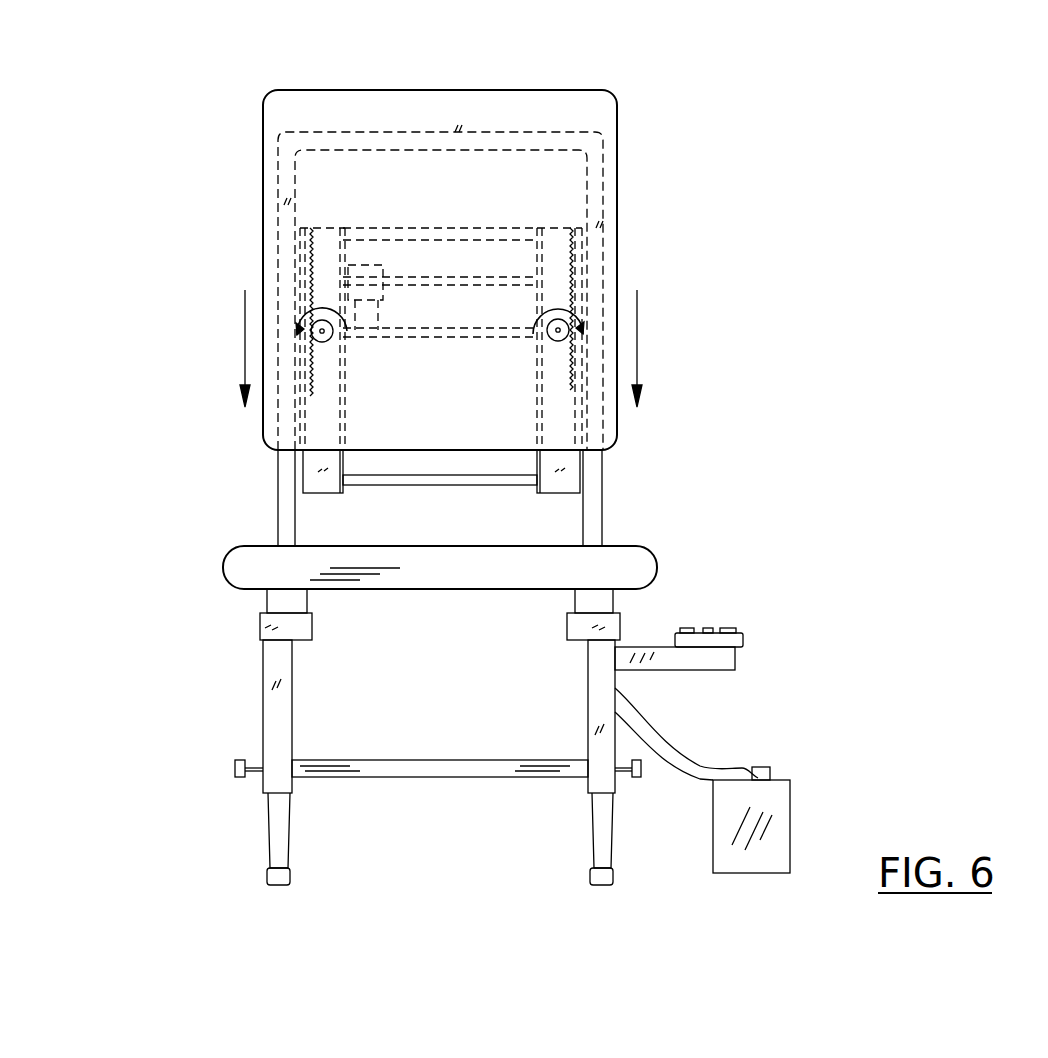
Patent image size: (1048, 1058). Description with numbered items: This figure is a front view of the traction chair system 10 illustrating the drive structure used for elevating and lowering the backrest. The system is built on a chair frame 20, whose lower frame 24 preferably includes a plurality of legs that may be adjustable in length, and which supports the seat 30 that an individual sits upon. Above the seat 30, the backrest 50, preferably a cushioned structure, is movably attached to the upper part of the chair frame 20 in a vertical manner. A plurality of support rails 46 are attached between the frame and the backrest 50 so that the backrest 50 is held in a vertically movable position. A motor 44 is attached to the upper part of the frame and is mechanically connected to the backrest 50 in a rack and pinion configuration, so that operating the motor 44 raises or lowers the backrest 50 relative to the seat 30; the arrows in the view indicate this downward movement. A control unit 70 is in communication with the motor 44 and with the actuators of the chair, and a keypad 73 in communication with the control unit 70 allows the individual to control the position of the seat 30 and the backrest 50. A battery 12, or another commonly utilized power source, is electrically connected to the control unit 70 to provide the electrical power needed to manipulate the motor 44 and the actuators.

The traction chair system 10 is at (925, 140).
The battery 12 is at (790, 803).
The chair frame 20 is at (263, 715).
The lower frame 24 is at (607, 680).
The seat 30 is at (232, 565).
The motor 44 is at (365, 290).
The support rails 46 is at (305, 480).
The backrest 50 is at (610, 168).
The control unit 70 is at (743, 638).
The keypad 73 is at (720, 633).